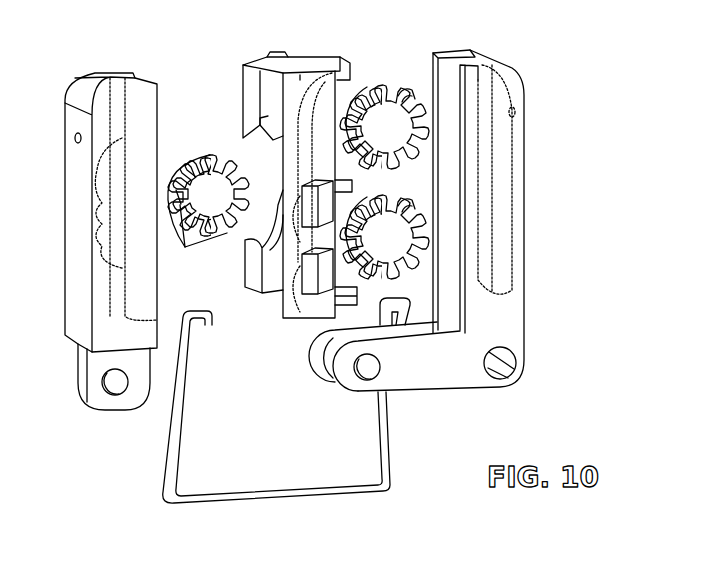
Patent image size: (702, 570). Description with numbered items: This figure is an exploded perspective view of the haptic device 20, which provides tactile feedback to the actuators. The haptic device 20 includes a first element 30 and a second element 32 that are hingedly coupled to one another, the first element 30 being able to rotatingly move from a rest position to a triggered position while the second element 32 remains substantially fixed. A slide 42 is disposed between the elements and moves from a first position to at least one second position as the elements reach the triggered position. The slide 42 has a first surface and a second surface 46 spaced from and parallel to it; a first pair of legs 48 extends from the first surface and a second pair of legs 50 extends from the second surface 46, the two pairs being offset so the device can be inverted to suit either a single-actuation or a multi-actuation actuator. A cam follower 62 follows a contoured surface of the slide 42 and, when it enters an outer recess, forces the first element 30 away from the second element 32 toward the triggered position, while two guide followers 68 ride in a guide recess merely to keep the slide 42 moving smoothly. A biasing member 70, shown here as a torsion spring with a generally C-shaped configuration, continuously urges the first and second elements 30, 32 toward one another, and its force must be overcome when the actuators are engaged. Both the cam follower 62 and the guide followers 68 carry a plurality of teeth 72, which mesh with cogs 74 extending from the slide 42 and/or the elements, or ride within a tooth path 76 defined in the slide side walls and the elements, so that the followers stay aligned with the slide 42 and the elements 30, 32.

The haptic device 20 is at (526, 40).
The first element 30 is at (68, 320).
The second element 32 is at (512, 326).
The slide 42 is at (305, 60).
The second surface 46 is at (304, 97).
The first pair of legs 48 is at (280, 54).
The second pair of legs 50 is at (305, 218).
The cam follower 62 is at (212, 156).
The guide follower 68 is at (378, 93).
The biasing member 70 is at (285, 497).
The teeth 72 is at (430, 47).
The cogs 74 is at (277, 188).
The tooth path 76 is at (256, 130).